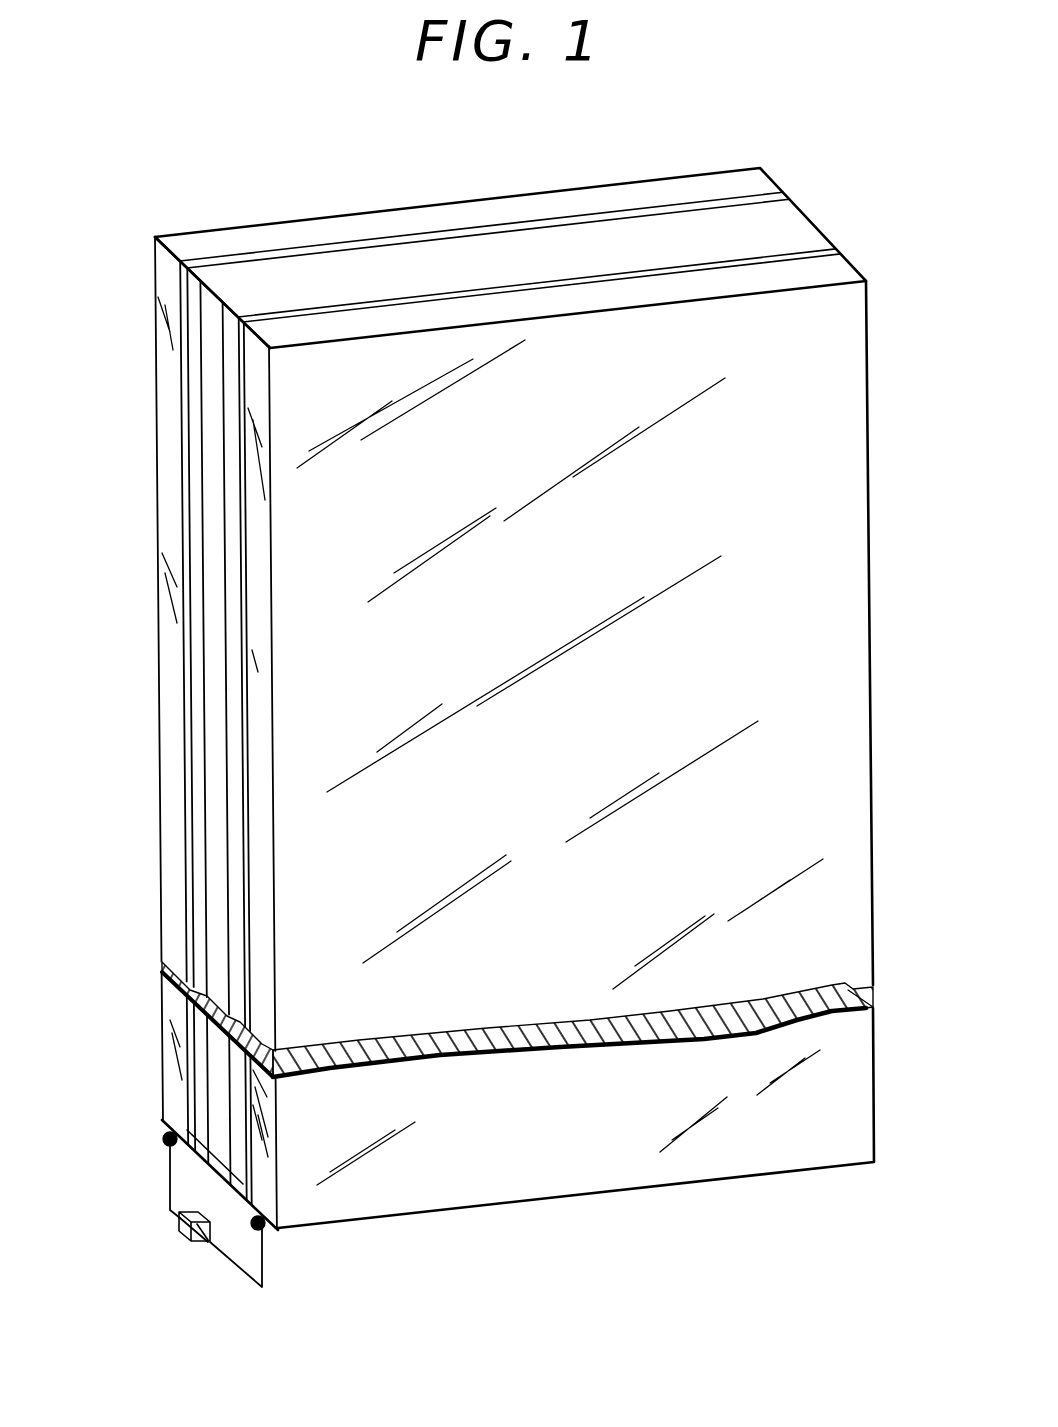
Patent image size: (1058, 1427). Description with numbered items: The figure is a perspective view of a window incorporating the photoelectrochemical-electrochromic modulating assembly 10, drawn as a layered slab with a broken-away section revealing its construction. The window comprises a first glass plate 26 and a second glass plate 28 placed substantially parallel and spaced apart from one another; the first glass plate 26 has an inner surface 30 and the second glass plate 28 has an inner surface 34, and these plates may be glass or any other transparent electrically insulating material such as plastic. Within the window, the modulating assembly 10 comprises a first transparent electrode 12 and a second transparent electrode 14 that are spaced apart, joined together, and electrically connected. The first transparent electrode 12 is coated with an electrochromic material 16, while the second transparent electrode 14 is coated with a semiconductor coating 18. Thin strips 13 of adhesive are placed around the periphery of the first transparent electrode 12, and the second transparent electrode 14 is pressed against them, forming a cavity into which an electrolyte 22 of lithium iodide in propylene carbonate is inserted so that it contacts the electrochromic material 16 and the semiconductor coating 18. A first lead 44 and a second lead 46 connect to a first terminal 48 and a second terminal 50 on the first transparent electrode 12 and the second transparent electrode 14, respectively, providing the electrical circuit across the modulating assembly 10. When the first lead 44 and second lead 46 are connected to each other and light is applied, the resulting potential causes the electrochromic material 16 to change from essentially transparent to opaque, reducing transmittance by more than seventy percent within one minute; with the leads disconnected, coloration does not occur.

The modulating assembly 10 is at (852, 226).
The first transparent electrode 12 is at (240, 373).
The thin strips 13 is at (598, 242).
The second transparent electrode 14 is at (178, 417).
The electrochromic material 16 is at (232, 468).
The semiconductor coating 18 is at (193, 522).
The electrolyte 22 is at (213, 1108).
The first glass plate 26 is at (603, 1160).
The second glass plate 28 is at (173, 607).
The inner surface 30 is at (252, 1120).
The inner surface 34 is at (178, 1010).
The first lead 44 is at (255, 1289).
The second lead 46 is at (170, 1180).
The first terminal 48 is at (260, 1230).
The second terminal 50 is at (166, 1144).